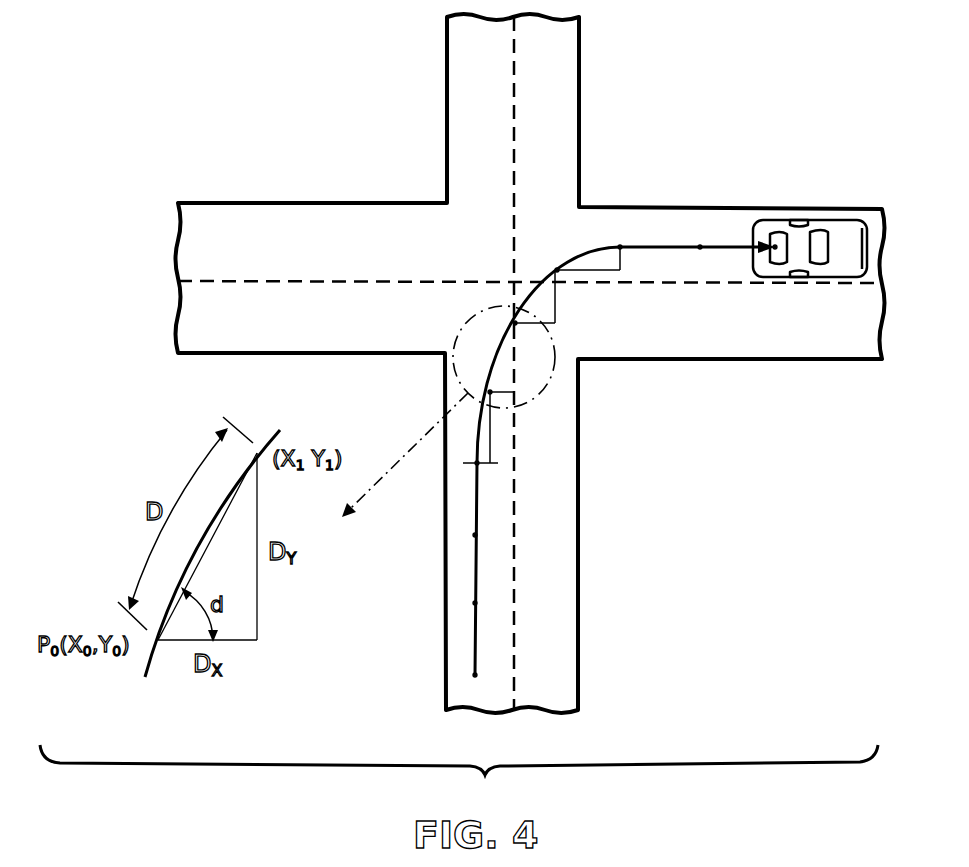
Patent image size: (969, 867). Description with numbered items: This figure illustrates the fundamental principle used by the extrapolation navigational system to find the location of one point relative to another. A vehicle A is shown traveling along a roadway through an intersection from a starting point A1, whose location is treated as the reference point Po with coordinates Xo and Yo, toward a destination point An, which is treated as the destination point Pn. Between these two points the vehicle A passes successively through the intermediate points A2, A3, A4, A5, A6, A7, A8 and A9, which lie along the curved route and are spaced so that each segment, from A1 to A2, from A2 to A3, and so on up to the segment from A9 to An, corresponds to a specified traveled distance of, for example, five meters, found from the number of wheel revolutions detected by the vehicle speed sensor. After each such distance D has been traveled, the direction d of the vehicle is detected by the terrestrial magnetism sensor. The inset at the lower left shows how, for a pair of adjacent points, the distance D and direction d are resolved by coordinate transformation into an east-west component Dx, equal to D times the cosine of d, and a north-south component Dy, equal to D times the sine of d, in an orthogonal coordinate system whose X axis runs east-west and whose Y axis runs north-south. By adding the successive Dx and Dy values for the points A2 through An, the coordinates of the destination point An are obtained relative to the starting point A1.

The starting point A1 is at (492, 667).
The traveled point A2 is at (492, 602).
The traveled point A3 is at (492, 537).
The traveled point A4 is at (493, 482).
The traveled point A5 is at (479, 380).
The traveled point A6 is at (498, 327).
The traveled point A7 is at (550, 256).
The traveled point A8 is at (618, 232).
The traveled point A9 is at (688, 232).
The destination point An is at (789, 202).
The vehicle A is at (797, 240).